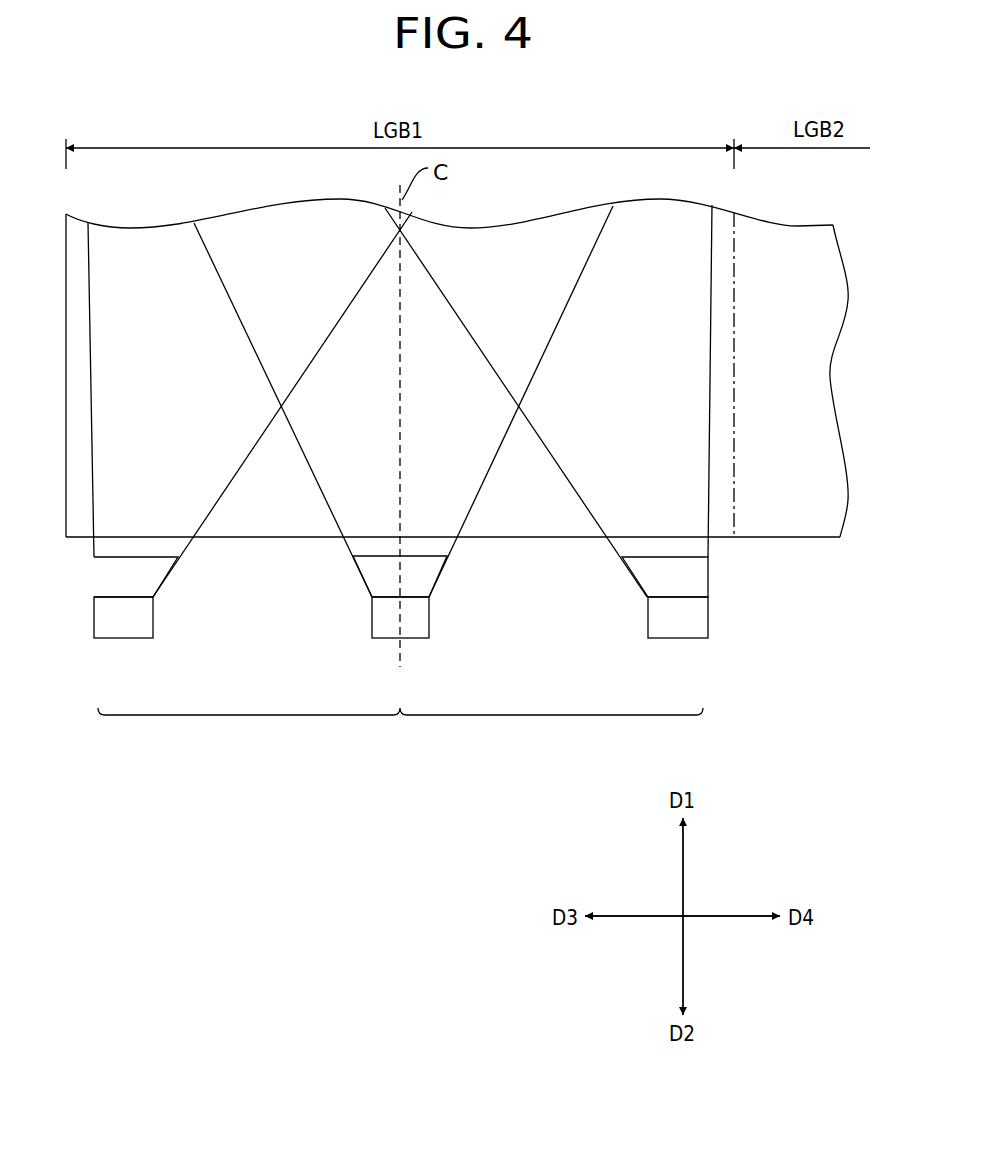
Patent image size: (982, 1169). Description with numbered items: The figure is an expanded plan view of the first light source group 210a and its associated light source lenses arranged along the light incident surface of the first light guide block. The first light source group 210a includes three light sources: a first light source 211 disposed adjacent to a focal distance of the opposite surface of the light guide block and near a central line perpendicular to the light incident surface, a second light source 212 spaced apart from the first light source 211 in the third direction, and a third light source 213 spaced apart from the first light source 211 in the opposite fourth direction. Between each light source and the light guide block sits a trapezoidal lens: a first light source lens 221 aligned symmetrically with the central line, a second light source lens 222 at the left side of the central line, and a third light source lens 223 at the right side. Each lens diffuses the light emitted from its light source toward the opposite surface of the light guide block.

The first light source group 210a is at (400, 730).
The first light source 211 is at (383, 630).
The second light source 212 is at (122, 630).
The third light source 213 is at (678, 630).
The first light source lens 221 is at (380, 565).
The second light source lens 222 is at (127, 565).
The third light source lens 223 is at (668, 565).